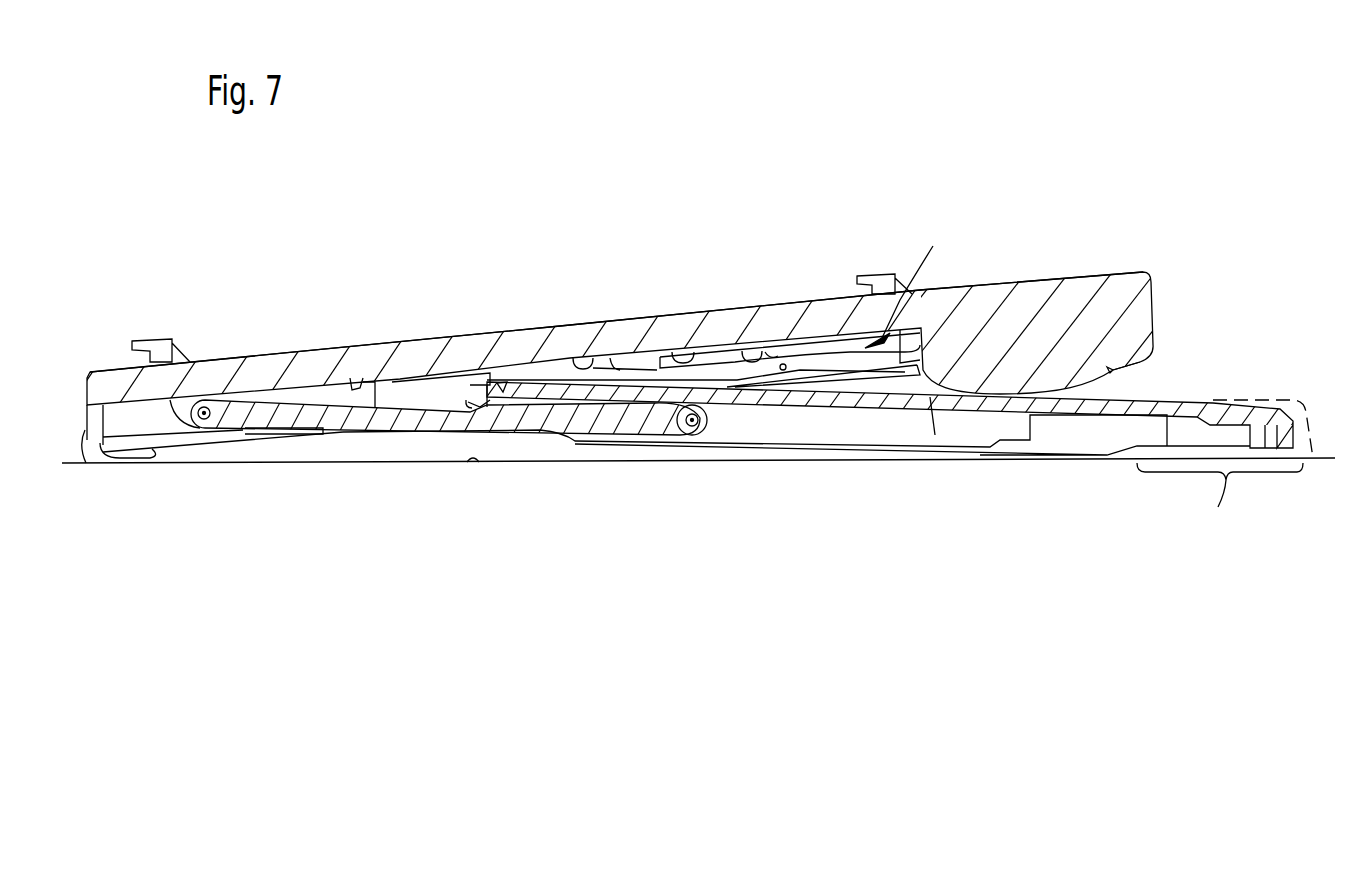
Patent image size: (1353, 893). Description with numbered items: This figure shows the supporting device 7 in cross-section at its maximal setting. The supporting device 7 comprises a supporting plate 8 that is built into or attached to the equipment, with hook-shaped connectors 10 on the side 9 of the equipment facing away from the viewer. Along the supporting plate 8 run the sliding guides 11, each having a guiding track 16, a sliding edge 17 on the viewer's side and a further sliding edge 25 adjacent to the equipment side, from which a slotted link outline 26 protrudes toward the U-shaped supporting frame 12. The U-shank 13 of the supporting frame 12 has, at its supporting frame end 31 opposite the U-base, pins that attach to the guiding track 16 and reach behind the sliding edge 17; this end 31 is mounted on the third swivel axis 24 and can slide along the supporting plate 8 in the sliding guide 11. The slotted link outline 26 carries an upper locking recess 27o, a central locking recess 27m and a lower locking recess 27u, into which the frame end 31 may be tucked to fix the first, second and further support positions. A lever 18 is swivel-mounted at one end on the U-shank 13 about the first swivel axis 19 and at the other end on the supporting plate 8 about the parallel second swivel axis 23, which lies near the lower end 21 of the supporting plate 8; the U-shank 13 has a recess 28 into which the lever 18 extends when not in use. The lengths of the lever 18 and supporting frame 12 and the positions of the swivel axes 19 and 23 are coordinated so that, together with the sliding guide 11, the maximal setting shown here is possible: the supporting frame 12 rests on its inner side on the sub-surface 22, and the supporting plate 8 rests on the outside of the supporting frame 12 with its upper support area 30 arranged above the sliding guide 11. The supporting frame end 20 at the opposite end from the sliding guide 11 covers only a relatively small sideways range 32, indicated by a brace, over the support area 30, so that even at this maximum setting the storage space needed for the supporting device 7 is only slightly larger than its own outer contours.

The supporting device 7 is at (422, 200).
The supporting plate 8 is at (586, 322).
The side 9 is at (737, 310).
The connector 10 is at (162, 340).
The sliding guide 11 is at (912, 281).
The supporting frame 12 is at (882, 405).
The U-shank 13 is at (831, 392).
The guiding track 16 is at (817, 352).
The sliding edge 17 is at (783, 372).
The lever 18 is at (415, 430).
The first swivel axis 19 is at (692, 426).
The end of the supporting frame 20 is at (1272, 470).
The lower end of the supporting plate 21 is at (85, 463).
The sub-surface 22 is at (475, 458).
The second swivel axis 23 is at (205, 420).
The third swivel axis 24 is at (477, 400).
The sliding edge 25 is at (359, 378).
The slotted link outline 26 is at (770, 352).
The lower locking recess 27u is at (527, 365).
The central locking recess 27m is at (605, 360).
The upper locking recess 27o is at (692, 350).
The recess 28 is at (933, 405).
The upper support area 30 is at (1117, 373).
The supporting frame end 31 is at (467, 400).
The sideways range 32 is at (1220, 506).